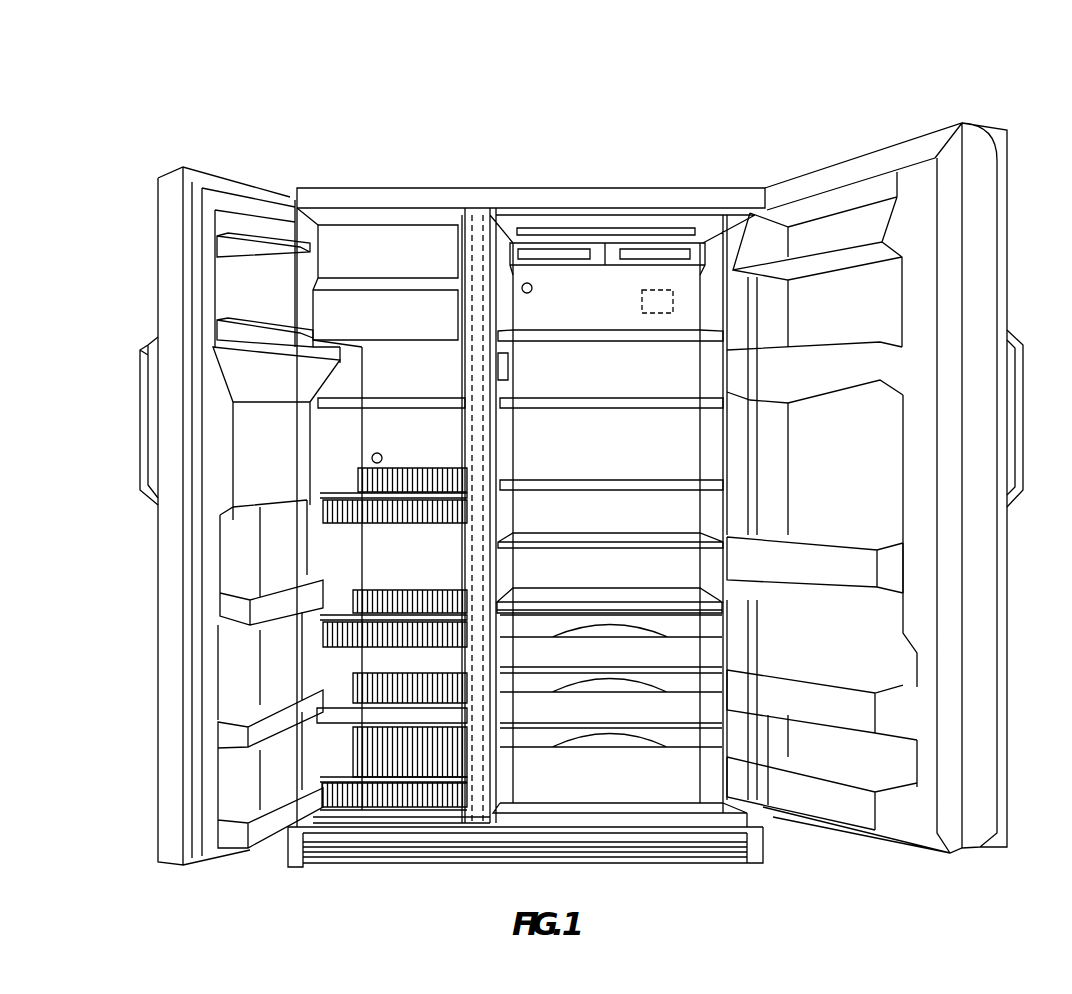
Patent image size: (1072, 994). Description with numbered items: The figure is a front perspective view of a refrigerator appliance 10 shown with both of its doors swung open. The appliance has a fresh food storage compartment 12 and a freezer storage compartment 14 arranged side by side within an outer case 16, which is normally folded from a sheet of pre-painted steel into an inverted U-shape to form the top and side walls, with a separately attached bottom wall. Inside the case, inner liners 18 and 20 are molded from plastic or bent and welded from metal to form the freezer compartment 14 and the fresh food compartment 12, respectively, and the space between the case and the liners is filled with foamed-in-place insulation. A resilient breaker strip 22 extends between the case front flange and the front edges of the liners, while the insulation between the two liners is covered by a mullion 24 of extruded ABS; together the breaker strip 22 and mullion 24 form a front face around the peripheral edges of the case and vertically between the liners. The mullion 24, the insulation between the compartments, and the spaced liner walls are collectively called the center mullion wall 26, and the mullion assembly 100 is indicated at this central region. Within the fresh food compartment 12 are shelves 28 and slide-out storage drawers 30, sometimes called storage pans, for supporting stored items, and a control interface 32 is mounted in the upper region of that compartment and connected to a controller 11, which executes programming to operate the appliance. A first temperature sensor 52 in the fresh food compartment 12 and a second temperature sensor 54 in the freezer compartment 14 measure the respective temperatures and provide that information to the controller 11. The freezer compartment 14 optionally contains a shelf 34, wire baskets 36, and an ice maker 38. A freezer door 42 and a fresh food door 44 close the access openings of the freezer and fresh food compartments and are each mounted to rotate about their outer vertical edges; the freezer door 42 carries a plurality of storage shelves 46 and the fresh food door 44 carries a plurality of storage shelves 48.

The refrigerator appliance 10 is at (742, 107).
The controller 11 is at (673, 300).
The fresh food storage compartment 12 is at (707, 218).
The freezer storage compartment 14 is at (425, 247).
The outer case 16 is at (560, 185).
The inner liner 18 is at (630, 220).
The inner liner 20 is at (375, 220).
The breaker strip 22 is at (683, 197).
The mullion 24 is at (472, 792).
The center mullion wall 26 is at (505, 443).
The shelves 28 is at (630, 480).
The slide-out storage drawers 30 is at (574, 653).
The control interface 32 is at (665, 245).
The shelf 34 is at (386, 410).
The wire baskets 36 is at (347, 618).
The ice maker 38 is at (392, 327).
The freezer door 42 is at (236, 176).
The fresh food door 44 is at (1010, 215).
The storage shelves 46 is at (230, 835).
The storage shelves 48 is at (818, 557).
The first temperature sensor 52 is at (532, 290).
The second temperature sensor 54 is at (383, 460).
The mullion assembly 100 is at (468, 247).